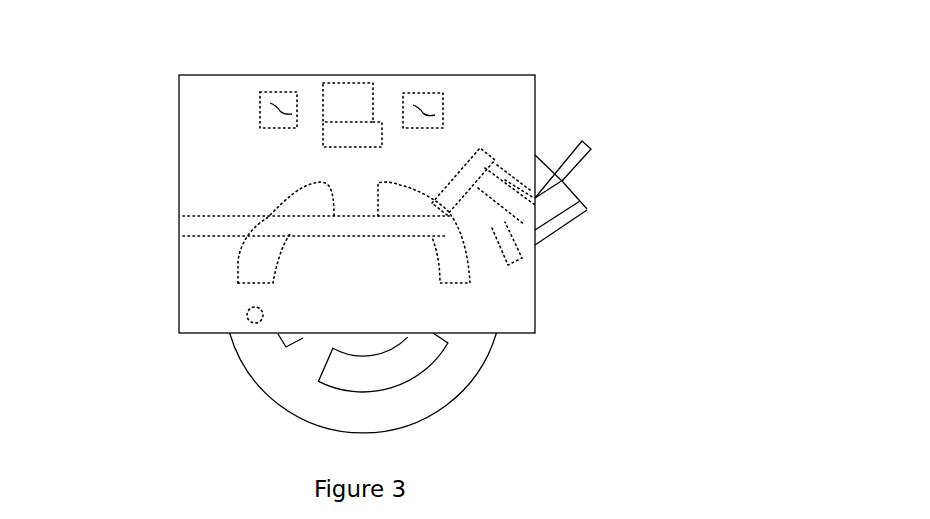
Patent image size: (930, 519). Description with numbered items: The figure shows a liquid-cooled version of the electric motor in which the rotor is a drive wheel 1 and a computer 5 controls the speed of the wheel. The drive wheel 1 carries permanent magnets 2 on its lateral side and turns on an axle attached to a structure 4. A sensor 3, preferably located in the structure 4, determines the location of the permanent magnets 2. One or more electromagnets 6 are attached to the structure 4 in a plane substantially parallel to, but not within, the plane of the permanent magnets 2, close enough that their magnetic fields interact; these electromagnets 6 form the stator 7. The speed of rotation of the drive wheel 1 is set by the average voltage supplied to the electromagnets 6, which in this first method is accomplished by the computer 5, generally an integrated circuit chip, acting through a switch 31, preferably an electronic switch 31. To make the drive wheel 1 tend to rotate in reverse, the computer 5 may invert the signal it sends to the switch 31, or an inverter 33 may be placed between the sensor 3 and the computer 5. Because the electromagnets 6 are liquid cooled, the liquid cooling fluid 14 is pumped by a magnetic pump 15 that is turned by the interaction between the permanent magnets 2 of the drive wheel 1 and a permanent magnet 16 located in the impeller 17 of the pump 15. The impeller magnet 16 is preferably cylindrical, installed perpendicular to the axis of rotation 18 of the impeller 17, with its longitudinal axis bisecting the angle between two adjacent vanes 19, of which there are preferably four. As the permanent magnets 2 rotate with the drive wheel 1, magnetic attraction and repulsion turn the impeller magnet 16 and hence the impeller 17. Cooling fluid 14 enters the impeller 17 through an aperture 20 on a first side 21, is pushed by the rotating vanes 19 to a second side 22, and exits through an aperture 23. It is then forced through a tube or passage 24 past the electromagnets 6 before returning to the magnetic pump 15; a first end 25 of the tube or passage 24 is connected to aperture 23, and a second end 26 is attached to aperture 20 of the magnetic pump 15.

The drive wheel 1 is at (262, 378).
The permanent magnets 2 is at (280, 338).
The sensor 3 is at (250, 315).
The structure 4 is at (205, 102).
The computer 5 is at (347, 102).
The electromagnets 6 is at (390, 193).
The stator 7 is at (327, 158).
The liquid cooling fluid 14 is at (590, 150).
The magnetic pump 15 is at (608, 122).
The impeller magnet 16 is at (510, 225).
The impeller 17 is at (550, 170).
The axis of rotation 18 is at (562, 182).
The vanes 19 is at (540, 165).
The aperture 20 is at (558, 168).
The first side 21 is at (573, 192).
The second side 22 is at (527, 163).
The aperture 23 is at (520, 163).
The tube or passage 24 is at (460, 177).
The first end 25 is at (484, 134).
The second end 26 is at (570, 165).
The switch 31 is at (280, 93).
The inverter 33 is at (422, 93).